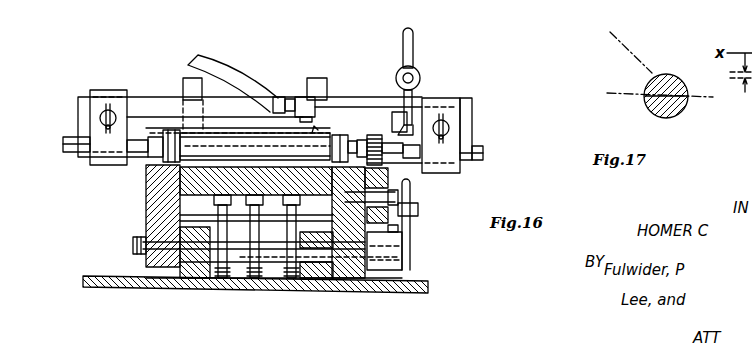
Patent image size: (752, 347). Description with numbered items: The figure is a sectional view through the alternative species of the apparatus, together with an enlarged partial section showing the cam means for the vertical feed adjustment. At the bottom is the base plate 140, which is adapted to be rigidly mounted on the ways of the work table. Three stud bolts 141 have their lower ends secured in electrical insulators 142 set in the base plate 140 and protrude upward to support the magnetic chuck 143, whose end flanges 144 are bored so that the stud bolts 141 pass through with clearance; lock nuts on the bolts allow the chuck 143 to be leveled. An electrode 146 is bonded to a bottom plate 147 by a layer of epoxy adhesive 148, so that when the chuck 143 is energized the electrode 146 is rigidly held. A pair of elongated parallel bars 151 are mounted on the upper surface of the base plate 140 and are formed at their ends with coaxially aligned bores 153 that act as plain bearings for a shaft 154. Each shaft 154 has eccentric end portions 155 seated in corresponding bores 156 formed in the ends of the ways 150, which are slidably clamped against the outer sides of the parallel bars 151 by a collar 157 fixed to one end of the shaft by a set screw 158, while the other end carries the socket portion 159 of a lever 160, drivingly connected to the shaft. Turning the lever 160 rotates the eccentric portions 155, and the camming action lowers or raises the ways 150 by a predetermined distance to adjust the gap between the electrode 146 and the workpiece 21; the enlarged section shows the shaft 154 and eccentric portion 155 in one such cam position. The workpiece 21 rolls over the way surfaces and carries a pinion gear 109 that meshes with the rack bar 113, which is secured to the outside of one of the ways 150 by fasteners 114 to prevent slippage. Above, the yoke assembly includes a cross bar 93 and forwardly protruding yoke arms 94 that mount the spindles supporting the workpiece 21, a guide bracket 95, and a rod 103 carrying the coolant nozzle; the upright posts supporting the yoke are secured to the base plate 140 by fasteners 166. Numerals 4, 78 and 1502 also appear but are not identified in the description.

In FIG. 16, the frame section 4 is at (359, 234).
In FIG. 16, the workpiece 21 is at (313, 133).
In FIG. 16, the shaft 78 is at (484, 150).
In FIG. 16, the cross bar 93 is at (472, 112).
In FIG. 16, the yoke arms 94 is at (97, 90).
In FIG. 16, the bracket 95 is at (62, 142).
In FIG. 16, the rod 103 is at (414, 42).
In FIG. 16, the pinion gear 109 is at (377, 121).
In FIG. 16, the rack bar 113 is at (407, 174).
In FIG. 16, the headed bolts 114 is at (470, 242).
In FIG. 16, the base plate 140 is at (428, 287).
In FIG. 16, the stud bolts 141 is at (228, 287).
In FIG. 16, the electrical insulators 142 is at (270, 290).
In FIG. 16, the magnetic chuck 143 is at (187, 195).
In FIG. 16, the end flanges 144 is at (187, 214).
In FIG. 16, the electrode 146 is at (222, 161).
In FIG. 16, the bottom plate 147 is at (147, 186).
In FIG. 16, the epoxy adhesive layer 148 is at (266, 154).
In FIG. 16, the ways 150 is at (162, 266).
In FIG. 16, the parallel bars 151 is at (181, 272).
In FIG. 16, the bores 153 is at (147, 228).
In FIG. 16, the shaft 154 is at (272, 178).
In FIG. 17, the shaft 154 is at (687, 86).
In FIG. 16, the eccentric end portions 155 is at (140, 256).
In FIG. 17, the eccentric end portions 155 is at (643, 105).
In FIG. 16, the bores 156 is at (143, 238).
In FIG. 16, the collar 157 is at (147, 258).
In FIG. 16, the set screw 158 is at (133, 248).
In FIG. 16, the socket portion 159 is at (420, 243).
In FIG. 16, the lever 160 is at (418, 222).
In FIG. 16, the fasteners 166 is at (338, 63).
In FIG. 16, the collar 1502 is at (164, 160).